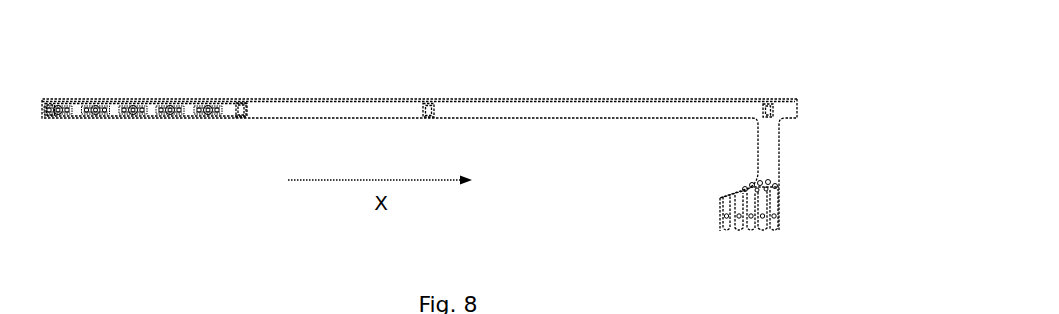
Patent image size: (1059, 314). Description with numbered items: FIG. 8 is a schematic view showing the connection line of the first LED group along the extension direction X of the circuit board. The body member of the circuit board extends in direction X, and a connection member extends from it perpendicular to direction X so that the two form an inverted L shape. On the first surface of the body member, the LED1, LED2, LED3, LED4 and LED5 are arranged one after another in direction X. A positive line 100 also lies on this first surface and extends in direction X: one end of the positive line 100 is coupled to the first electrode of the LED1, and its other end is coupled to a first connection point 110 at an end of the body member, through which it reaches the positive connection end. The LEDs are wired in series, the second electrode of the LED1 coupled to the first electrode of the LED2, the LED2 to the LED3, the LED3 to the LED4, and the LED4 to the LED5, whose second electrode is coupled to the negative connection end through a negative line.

The positive line 100 is at (419, 119).
The first connection point 110 is at (800, 95).
The element LED1 is at (58, 120).
The element LED2 is at (96, 120).
The element LED3 is at (133, 120).
The element LED4 is at (170, 120).
The element LED5 is at (208, 120).